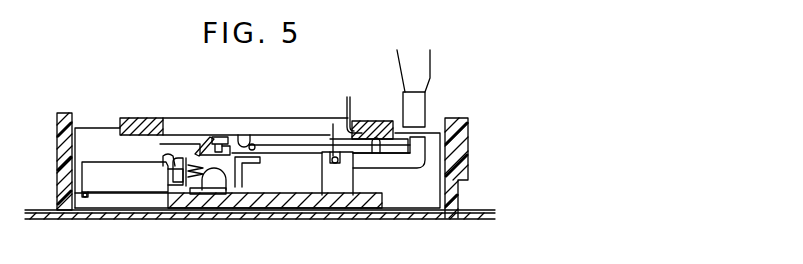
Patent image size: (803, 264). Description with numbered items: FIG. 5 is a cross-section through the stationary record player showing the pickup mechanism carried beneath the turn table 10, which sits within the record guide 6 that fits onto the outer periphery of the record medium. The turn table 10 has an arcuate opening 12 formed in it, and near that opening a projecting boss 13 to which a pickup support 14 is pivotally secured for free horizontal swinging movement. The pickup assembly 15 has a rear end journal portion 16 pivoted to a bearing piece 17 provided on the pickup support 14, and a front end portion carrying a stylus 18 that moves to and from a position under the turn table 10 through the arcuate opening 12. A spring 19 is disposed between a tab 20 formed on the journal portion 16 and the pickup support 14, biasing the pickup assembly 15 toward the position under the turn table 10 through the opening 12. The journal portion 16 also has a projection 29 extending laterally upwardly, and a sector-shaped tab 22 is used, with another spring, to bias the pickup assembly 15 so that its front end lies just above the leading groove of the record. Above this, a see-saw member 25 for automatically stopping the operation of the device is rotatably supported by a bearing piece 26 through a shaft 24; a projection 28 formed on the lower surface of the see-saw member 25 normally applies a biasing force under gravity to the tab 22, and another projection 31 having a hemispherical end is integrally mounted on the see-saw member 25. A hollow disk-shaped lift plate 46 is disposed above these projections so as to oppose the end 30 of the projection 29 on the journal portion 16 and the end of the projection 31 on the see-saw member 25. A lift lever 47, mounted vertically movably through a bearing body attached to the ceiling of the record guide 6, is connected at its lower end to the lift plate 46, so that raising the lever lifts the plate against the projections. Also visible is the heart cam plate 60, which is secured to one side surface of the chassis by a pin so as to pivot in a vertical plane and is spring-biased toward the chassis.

The record guide 6 is at (467, 143).
The turn table 10 is at (356, 203).
The arcuate opening 12 is at (135, 203).
The projecting boss 13 is at (206, 146).
The pickup support 14 is at (213, 190).
The pickup assembly 15 is at (113, 172).
The rear end journal portion 16 is at (165, 160).
The bearing piece 17 is at (170, 180).
The stylus 18 is at (86, 199).
The spring 19 is at (193, 180).
The tab 20 is at (222, 170).
The sector-shaped tab 22 is at (247, 160).
The shaft 24 is at (335, 156).
The see-saw member 25 is at (404, 162).
The bearing piece 26 is at (328, 175).
The projection 28 is at (256, 149).
The projection 29 is at (196, 152).
The end 30 is at (221, 139).
The projection 31 is at (393, 127).
The lift plate 46 is at (376, 130).
The lift lever 47 is at (347, 97).
The heart cam plate 60 is at (420, 101).